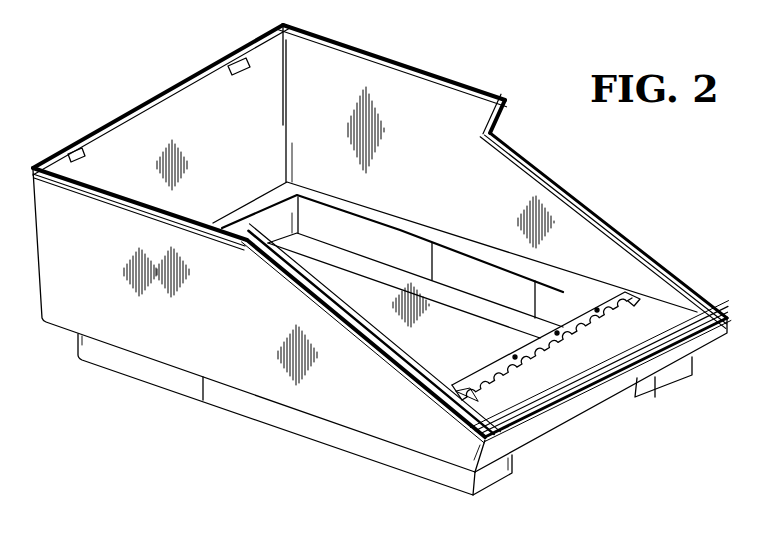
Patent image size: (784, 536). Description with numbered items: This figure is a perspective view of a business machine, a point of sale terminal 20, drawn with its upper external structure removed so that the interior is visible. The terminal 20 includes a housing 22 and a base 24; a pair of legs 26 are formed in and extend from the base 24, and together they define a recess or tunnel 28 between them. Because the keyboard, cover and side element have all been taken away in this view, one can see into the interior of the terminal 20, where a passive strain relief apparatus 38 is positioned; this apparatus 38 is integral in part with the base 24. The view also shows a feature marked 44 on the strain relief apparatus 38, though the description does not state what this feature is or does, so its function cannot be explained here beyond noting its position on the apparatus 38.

The point of sale terminal 20 is at (633, 212).
The housing 22 is at (88, 260).
The base 24 is at (362, 282).
The legs 26 is at (413, 477).
The recess or tunnel 28 is at (515, 469).
The passive strain relief apparatus 38 is at (640, 292).
The bar holes 44 is at (528, 351).